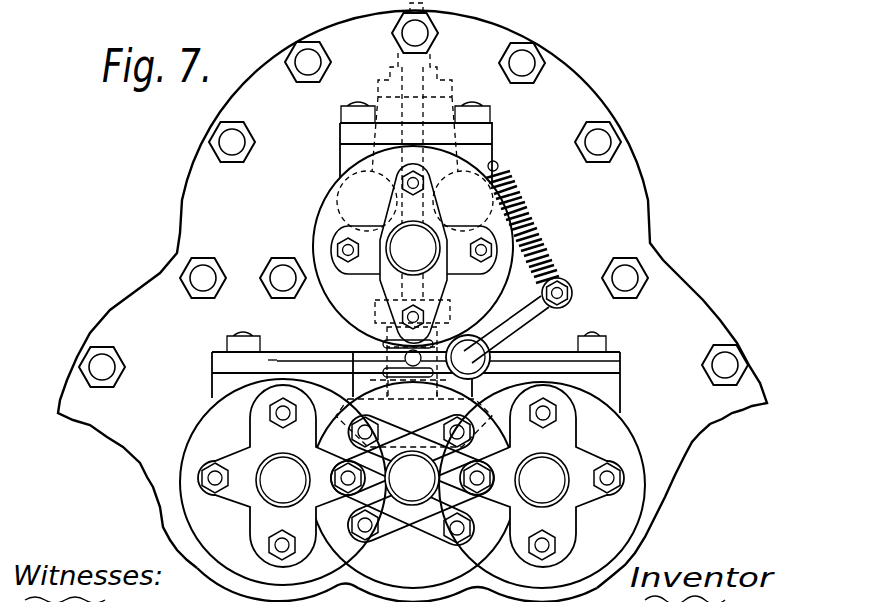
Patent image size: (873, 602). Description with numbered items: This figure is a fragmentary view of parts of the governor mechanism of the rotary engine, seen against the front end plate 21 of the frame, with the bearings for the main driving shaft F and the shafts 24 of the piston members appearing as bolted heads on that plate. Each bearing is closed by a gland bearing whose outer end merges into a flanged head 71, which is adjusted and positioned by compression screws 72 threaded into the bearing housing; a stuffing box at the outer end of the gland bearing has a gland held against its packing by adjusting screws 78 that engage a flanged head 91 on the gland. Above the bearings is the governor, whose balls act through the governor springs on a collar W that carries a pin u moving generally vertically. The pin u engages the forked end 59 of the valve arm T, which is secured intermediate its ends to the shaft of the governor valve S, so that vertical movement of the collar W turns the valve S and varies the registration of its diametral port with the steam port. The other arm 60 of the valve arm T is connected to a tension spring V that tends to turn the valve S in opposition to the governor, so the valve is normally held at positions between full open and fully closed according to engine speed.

The front end plate 21 is at (590, 88).
The shafts 24 is at (412, 480).
The forked end 59 is at (366, 330).
The arm 60 is at (572, 306).
The flanged head 71 is at (236, 453).
The compression screws 72 is at (201, 486).
The adjusting screws 78 is at (268, 413).
The flanged head 91 is at (418, 480).
The driving shaft F is at (412, 478).
The governor valve S is at (620, 360).
The valve arm T is at (527, 330).
The tension spring V is at (528, 224).
The collar W is at (390, 330).
The pin u is at (263, 360).